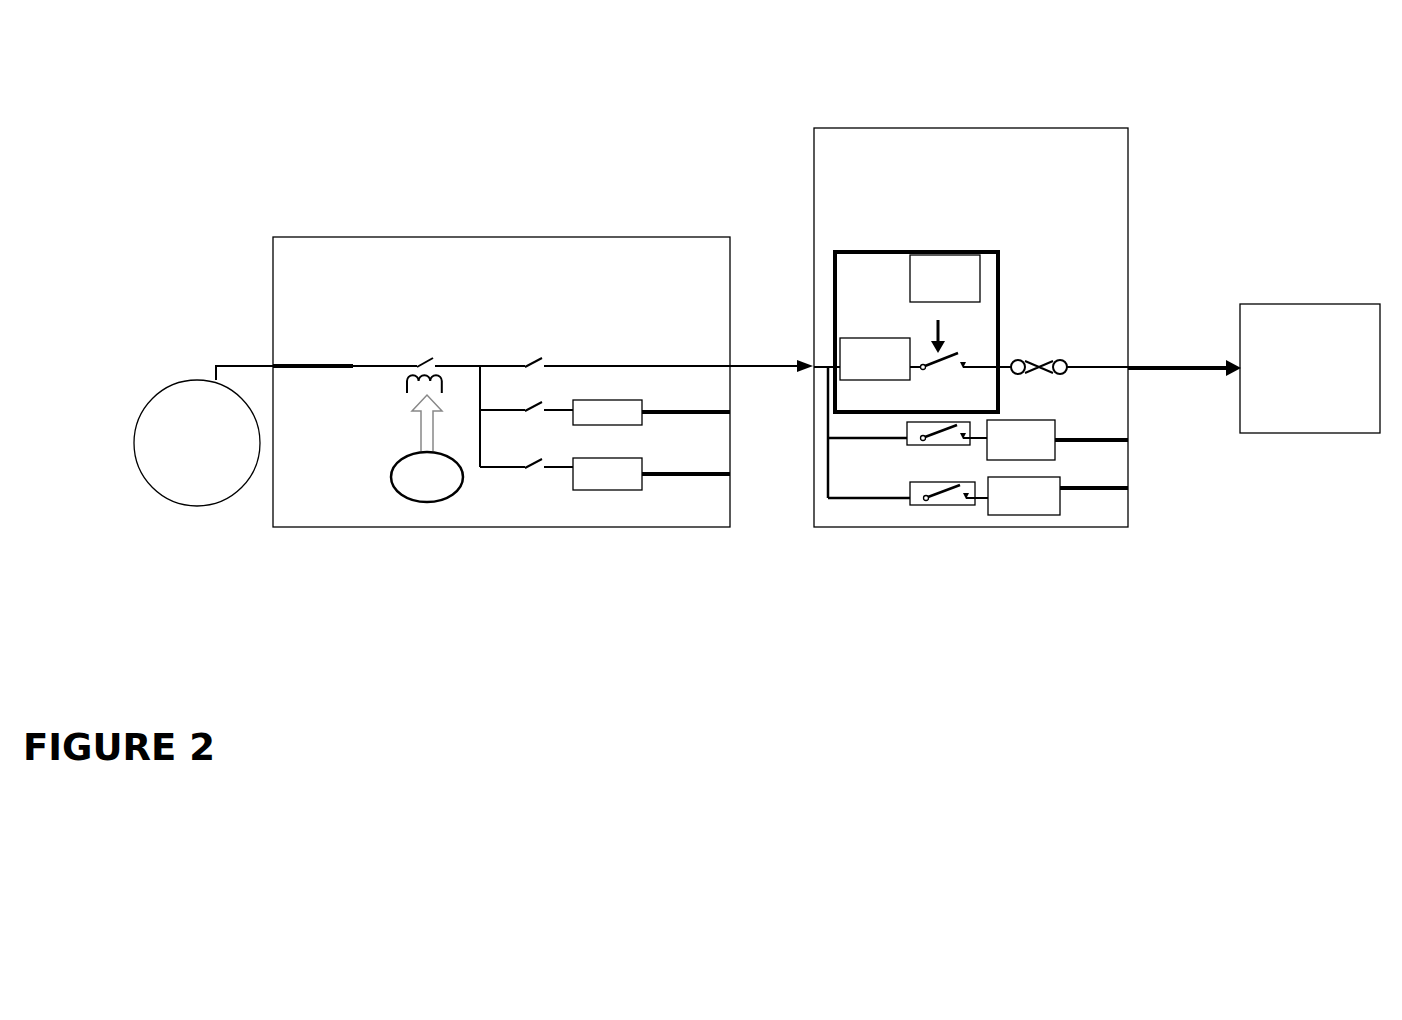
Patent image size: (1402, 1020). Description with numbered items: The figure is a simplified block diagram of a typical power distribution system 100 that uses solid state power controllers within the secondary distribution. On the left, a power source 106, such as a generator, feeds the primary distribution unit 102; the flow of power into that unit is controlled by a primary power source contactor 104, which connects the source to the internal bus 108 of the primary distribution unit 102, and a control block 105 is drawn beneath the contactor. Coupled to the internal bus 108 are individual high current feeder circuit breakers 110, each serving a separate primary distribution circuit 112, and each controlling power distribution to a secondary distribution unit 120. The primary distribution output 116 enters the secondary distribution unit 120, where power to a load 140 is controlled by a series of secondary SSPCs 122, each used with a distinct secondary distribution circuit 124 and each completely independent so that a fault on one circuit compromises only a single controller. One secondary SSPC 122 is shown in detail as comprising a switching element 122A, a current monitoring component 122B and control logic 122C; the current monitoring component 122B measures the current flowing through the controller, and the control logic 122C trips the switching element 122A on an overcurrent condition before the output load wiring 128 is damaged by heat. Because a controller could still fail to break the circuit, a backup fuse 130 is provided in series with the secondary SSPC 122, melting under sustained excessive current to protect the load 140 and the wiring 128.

The power distribution system 100 is at (630, 120).
The primary distribution unit 102 is at (501, 382).
The primary power source contactor 104 is at (466, 364).
The controller 105 is at (399, 448).
The power source 106 is at (203, 436).
The internal bus 108 is at (607, 351).
The high current feeder circuit breaker 110 is at (526, 432).
The primary distribution circuit 112 is at (651, 429).
The primary distribution output 116 is at (771, 352).
The secondary distribution unit 120 is at (971, 327).
The secondary SSPC 122 is at (908, 476).
The switching element 122A is at (923, 332).
The current monitoring component 122B is at (875, 359).
The control logic 122C is at (945, 278).
The secondary distribution circuit 124 is at (1057, 431).
The output load wiring 128 is at (1184, 361).
The backup fuse 130 is at (1069, 353).
The load 140 is at (1310, 368).